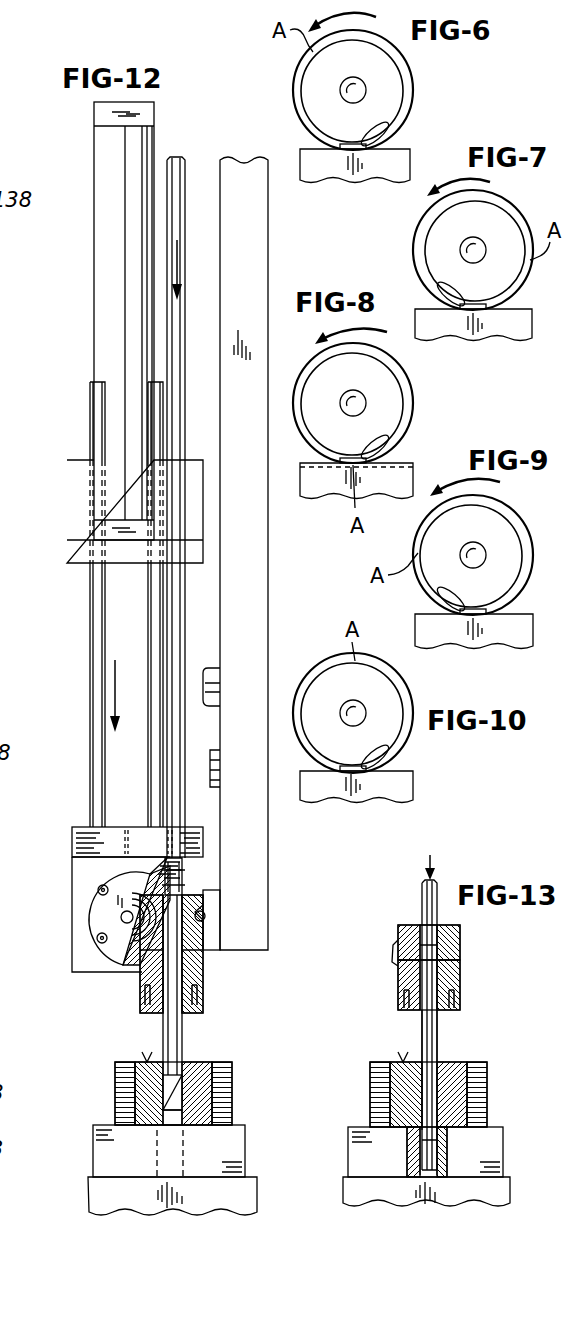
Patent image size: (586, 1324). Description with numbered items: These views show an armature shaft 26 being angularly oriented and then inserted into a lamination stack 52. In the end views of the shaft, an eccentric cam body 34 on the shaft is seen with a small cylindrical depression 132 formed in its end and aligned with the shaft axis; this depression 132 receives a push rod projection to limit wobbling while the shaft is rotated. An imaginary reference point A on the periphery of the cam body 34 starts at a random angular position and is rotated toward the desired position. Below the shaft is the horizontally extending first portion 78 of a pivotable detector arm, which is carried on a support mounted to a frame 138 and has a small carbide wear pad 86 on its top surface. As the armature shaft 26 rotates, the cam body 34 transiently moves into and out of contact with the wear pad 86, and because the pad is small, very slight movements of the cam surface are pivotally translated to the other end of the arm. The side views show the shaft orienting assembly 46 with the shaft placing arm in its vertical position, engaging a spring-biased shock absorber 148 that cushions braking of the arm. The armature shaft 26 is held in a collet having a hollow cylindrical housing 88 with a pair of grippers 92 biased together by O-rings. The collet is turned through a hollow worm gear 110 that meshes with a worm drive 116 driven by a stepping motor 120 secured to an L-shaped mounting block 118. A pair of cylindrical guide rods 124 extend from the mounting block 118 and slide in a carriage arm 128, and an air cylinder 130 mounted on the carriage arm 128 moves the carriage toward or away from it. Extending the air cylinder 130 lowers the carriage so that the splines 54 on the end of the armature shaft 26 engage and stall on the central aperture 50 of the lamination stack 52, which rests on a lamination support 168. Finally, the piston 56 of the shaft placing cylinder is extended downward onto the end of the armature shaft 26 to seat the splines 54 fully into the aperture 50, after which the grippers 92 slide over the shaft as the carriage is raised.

In FIG. 6, the armature shaft 26 is at (412, 78).
In FIG. 7, the armature shaft 26 is at (420, 220).
In FIG. 8, the armature shaft 26 is at (396, 362).
In FIG. 9, the armature shaft 26 is at (517, 507).
In FIG. 10, the armature shaft 26 is at (294, 718).
In FIG. 12, the armature shaft 26 is at (172, 1090).
In FIG. 13, the armature shaft 26 is at (428, 1157).
In FIG. 6, the cam body 34 is at (304, 71).
In FIG. 7, the cam body 34 is at (506, 222).
In FIG. 8, the cam body 34 is at (330, 371).
In FIG. 9, the cam body 34 is at (506, 540).
In FIG. 10, the cam body 34 is at (390, 675).
In FIG. 12, the cam body 34 is at (180, 885).
In FIG. 13, the cam body 34 is at (412, 930).
In FIG. 12, the shaft orienting assembly 46 is at (56, 949).
In FIG. 13, the shaft orienting assembly 46 is at (384, 982).
In FIG. 12, the central aperture 50 is at (170, 1130).
In FIG. 12, the lamination stack 52 is at (232, 1080).
In FIG. 13, the lamination stack 52 is at (480, 1062).
In FIG. 12, the splines 54 is at (176, 1032).
In FIG. 13, the splines 54 is at (424, 1032).
In FIG. 12, the piston 56 is at (181, 160).
In FIG. 13, the piston 56 is at (420, 893).
In FIG. 6, the first portion 78 is at (305, 154).
In FIG. 7, the first portion 78 is at (514, 316).
In FIG. 8, the first portion 78 is at (319, 497).
In FIG. 9, the first portion 78 is at (522, 618).
In FIG. 10, the first portion 78 is at (410, 783).
In FIG. 6, the wear pad 86 is at (382, 129).
In FIG. 7, the wear pad 86 is at (440, 270).
In FIG. 8, the wear pad 86 is at (392, 441).
In FIG. 9, the wear pad 86 is at (438, 594).
In FIG. 10, the wear pad 86 is at (386, 744).
In FIG. 12, the housing 88 is at (140, 990).
In FIG. 13, the housing 88 is at (460, 978).
In FIG. 12, the grippers 92 is at (200, 995).
In FIG. 13, the grippers 92 is at (456, 990).
In FIG. 12, the worm gear 110 is at (200, 917).
In FIG. 12, the worm drive 116 is at (127, 910).
In FIG. 12, the mounting block 118 is at (82, 833).
In FIG. 12, the stepping motor 120 is at (90, 895).
In FIG. 12, the guide rods 124 is at (153, 597).
In FIG. 12, the carriage arm 128 is at (72, 550).
In FIG. 12, the air cylinder 130 is at (106, 312).
In FIG. 6, the depression 132 is at (366, 90).
In FIG. 7, the depression 132 is at (460, 250).
In FIG. 8, the depression 132 is at (362, 401).
In FIG. 9, the depression 132 is at (460, 555).
In FIG. 10, the depression 132 is at (362, 712).
In FIG. 12, the frame 138 is at (245, 172).
In FIG. 13, the frame 138 is at (505, 1190).
In FIG. 12, the shock absorber 148 is at (212, 762).
In FIG. 12, the lamination support 168 is at (247, 1125).
In FIG. 13, the lamination support 168 is at (497, 1127).